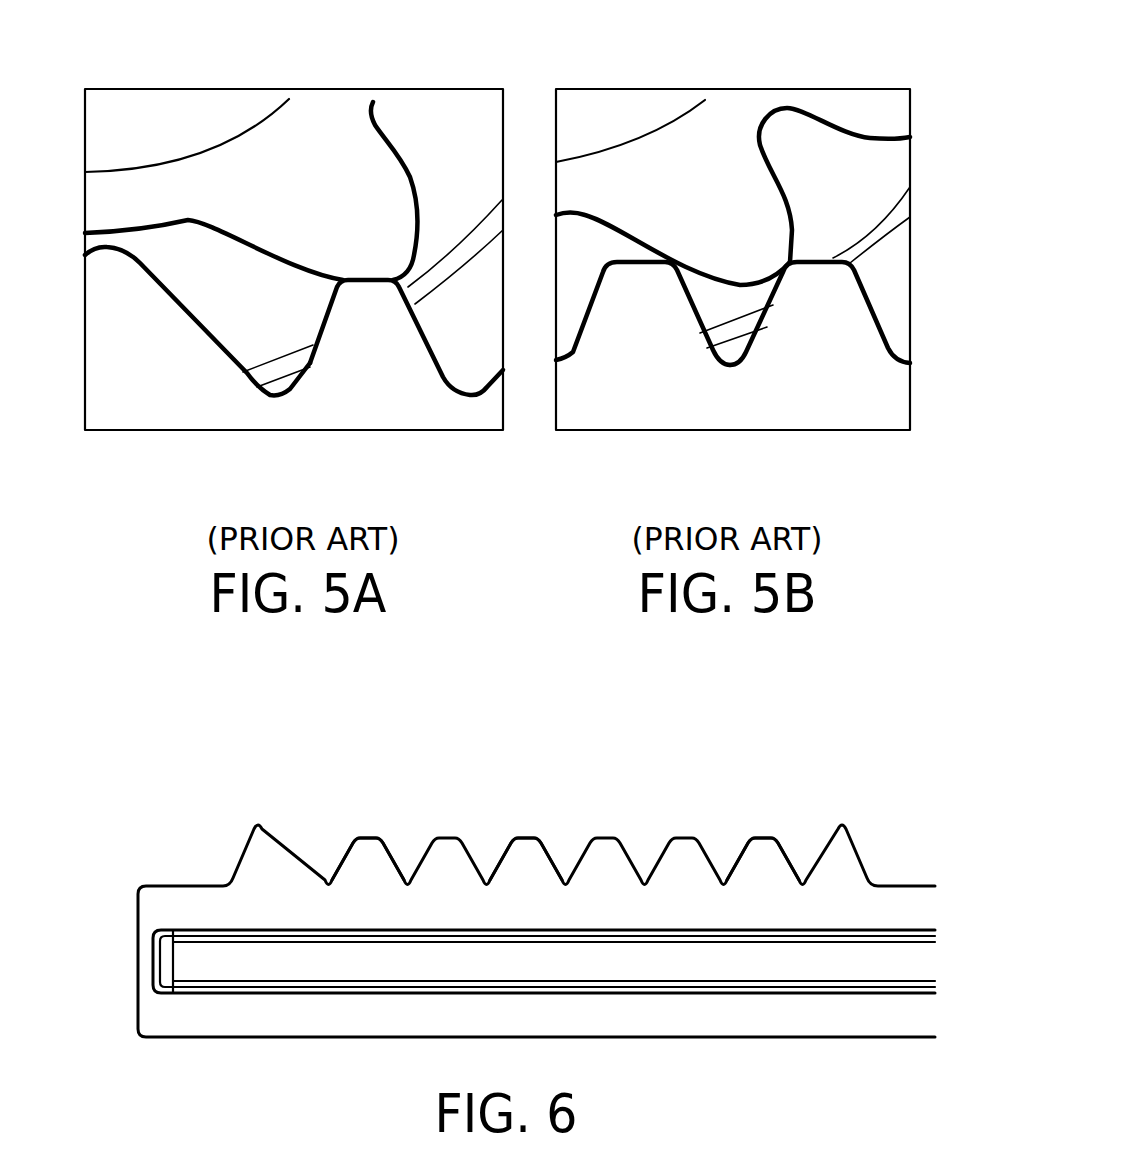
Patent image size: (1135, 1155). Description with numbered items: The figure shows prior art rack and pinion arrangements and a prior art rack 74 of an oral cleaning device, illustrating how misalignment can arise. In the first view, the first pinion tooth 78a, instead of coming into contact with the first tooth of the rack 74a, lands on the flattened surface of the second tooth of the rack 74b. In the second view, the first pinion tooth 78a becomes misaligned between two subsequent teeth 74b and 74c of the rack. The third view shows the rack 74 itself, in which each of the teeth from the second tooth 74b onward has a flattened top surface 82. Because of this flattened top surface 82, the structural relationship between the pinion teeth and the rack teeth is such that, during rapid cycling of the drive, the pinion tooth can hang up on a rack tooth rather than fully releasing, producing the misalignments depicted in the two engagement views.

In FIG. 5A, the first pinion tooth 78a is at (353, 220).
In FIG. 5B, the first pinion tooth 78a is at (737, 220).
In FIG. 5A, the first tooth of the rack 74a is at (113, 317).
In FIG. 5A, the second tooth of the rack 74b is at (377, 333).
In FIG. 5B, the second tooth of the rack 74b is at (642, 317).
In FIG. 6, the second tooth of the rack 74b is at (370, 838).
In FIG. 5B, the subsequent tooth of the rack 74c is at (822, 318).
In FIG. 6, the rack 74 is at (138, 990).
In FIG. 6, the flattened top surface 82 is at (525, 838).